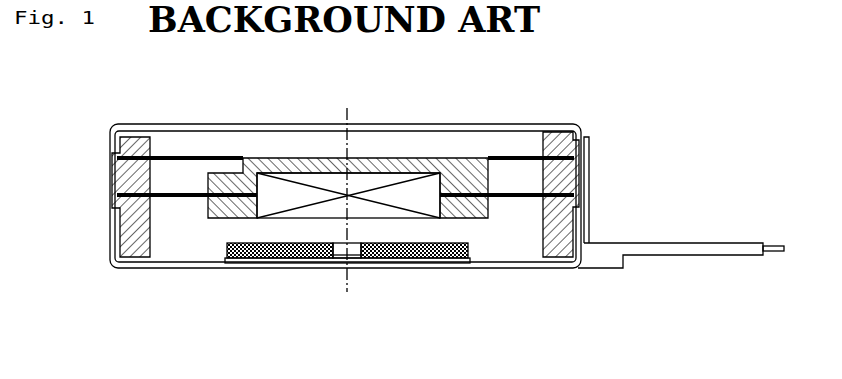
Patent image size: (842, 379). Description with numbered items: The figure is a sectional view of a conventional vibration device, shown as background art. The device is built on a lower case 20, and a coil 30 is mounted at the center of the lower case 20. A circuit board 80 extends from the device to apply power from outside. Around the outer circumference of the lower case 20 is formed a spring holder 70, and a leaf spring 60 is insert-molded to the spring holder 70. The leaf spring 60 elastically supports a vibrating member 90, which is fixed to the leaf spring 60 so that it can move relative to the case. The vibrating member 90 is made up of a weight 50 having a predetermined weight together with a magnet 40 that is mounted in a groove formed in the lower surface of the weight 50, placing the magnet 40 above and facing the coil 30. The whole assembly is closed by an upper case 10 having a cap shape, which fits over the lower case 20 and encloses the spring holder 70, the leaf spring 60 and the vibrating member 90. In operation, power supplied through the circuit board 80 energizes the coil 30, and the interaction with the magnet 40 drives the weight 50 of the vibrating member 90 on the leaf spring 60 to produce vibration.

The upper case 10 is at (113, 136).
The lower case 20 is at (298, 266).
The coil 30 is at (228, 254).
The magnet 40 is at (420, 187).
The weight 50 is at (510, 193).
The leaf spring 60 is at (187, 156).
The spring holder 70 is at (127, 143).
The circuit board 80 is at (722, 243).
The vibrating member 90 is at (273, 150).